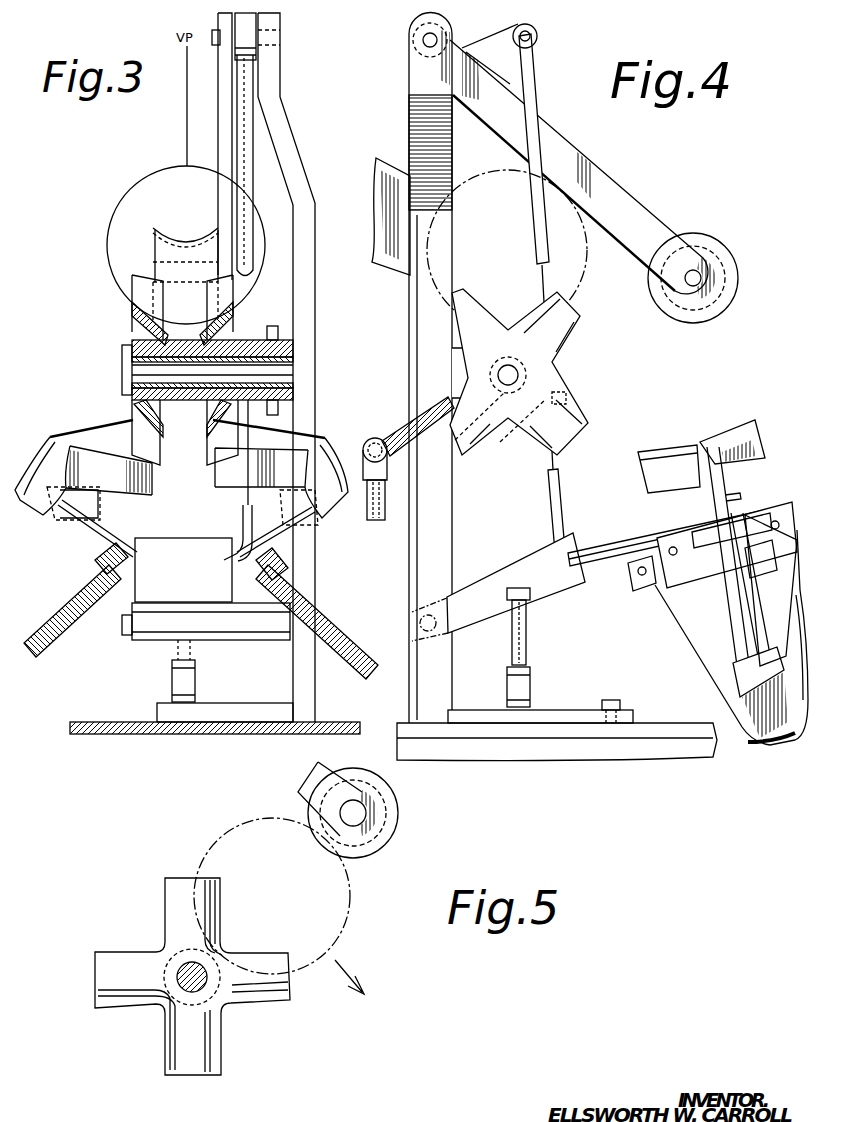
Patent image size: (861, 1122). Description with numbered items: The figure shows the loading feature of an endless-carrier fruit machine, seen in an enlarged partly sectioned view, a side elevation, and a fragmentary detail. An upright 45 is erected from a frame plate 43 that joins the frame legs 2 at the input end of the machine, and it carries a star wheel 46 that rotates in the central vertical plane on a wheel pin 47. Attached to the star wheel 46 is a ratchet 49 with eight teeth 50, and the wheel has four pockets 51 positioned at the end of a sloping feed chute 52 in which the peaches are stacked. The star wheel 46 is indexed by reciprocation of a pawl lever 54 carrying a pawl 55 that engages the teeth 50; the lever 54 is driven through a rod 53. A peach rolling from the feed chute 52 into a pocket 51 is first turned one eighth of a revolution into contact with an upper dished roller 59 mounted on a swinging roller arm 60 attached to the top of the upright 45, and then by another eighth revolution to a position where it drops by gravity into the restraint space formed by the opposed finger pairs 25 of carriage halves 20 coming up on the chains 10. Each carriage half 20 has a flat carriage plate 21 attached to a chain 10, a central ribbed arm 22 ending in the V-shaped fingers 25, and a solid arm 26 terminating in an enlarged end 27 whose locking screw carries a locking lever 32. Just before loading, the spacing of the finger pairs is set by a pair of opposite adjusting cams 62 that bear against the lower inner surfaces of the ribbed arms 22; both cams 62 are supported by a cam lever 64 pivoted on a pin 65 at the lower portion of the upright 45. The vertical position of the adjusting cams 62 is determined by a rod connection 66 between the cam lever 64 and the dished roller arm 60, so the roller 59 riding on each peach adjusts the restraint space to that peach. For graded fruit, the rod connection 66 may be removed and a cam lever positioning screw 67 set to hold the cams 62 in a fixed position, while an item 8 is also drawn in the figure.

In FIG. 4, the frame legs 2 is at (560, 740).
In FIG. 3, the tray 8 is at (80, 612).
In FIG. 4, the tray 8 is at (755, 738).
In FIG. 3, the roller chains 10 is at (96, 559).
In FIG. 4, the roller chains 10 is at (650, 582).
In FIG. 4, the carriage halves 20 is at (771, 590).
In FIG. 4, the carriage plate 21 is at (715, 642).
In FIG. 4, the central ribbed arm 22 is at (748, 652).
In FIG. 3, the fruit restraining fingers 25 is at (98, 412).
In FIG. 4, the fruit restraining fingers 25 is at (714, 440).
In FIG. 4, the solid arm 26 is at (715, 592).
In FIG. 4, the enlarged end 27 is at (700, 558).
In FIG. 4, the locking lever 32 is at (766, 580).
In FIG. 3, the frame plate 43 is at (190, 734).
In FIG. 4, the frame plate 43 is at (482, 738).
In FIG. 3, the upright 45 is at (315, 548).
In FIG. 4, the upright 45 is at (442, 560).
In FIG. 3, the star wheel 46 is at (133, 333).
In FIG. 4, the star wheel 46 is at (580, 322).
In FIG. 5, the star wheel 46 is at (230, 1068).
In FIG. 3, the wheel pin 47 is at (295, 351).
In FIG. 4, the wheel pin 47 is at (512, 386).
In FIG. 5, the wheel pin 47 is at (160, 947).
In FIG. 3, the ratchet 49 is at (286, 308).
In FIG. 4, the ratchet 49 is at (566, 400).
In FIG. 4, the teeth 50 is at (504, 326).
In FIG. 3, the pockets 51 is at (143, 312).
In FIG. 4, the pockets 51 is at (532, 312).
In FIG. 5, the pockets 51 is at (97, 955).
In FIG. 4, the feed chute 52 is at (398, 270).
In FIG. 4, the rod 53 is at (386, 498).
In FIG. 4, the pawl lever 54 is at (380, 438).
In FIG. 4, the pawl 55 is at (458, 446).
In FIG. 3, the dished roller 59 is at (186, 250).
In FIG. 4, the dished roller 59 is at (712, 250).
In FIG. 5, the dished roller 59 is at (383, 838).
In FIG. 3, the roller arm 60 is at (226, 92).
In FIG. 4, the roller arm 60 is at (657, 262).
In FIG. 5, the roller arm 60 is at (305, 784).
In FIG. 3, the adjusting cams 62 is at (100, 504).
In FIG. 4, the adjusting cams 62 is at (741, 496).
In FIG. 3, the cam lever 64 is at (183, 570).
In FIG. 4, the cam lever 64 is at (502, 578).
In FIG. 3, the pin 65 is at (140, 638).
In FIG. 4, the pin 65 is at (432, 633).
In FIG. 3, the rod connection 66 is at (254, 105).
In FIG. 4, the rod connection 66 is at (538, 98).
In FIG. 3, the cam lever positioning screw 67 is at (192, 648).
In FIG. 4, the cam lever positioning screw 67 is at (528, 646).